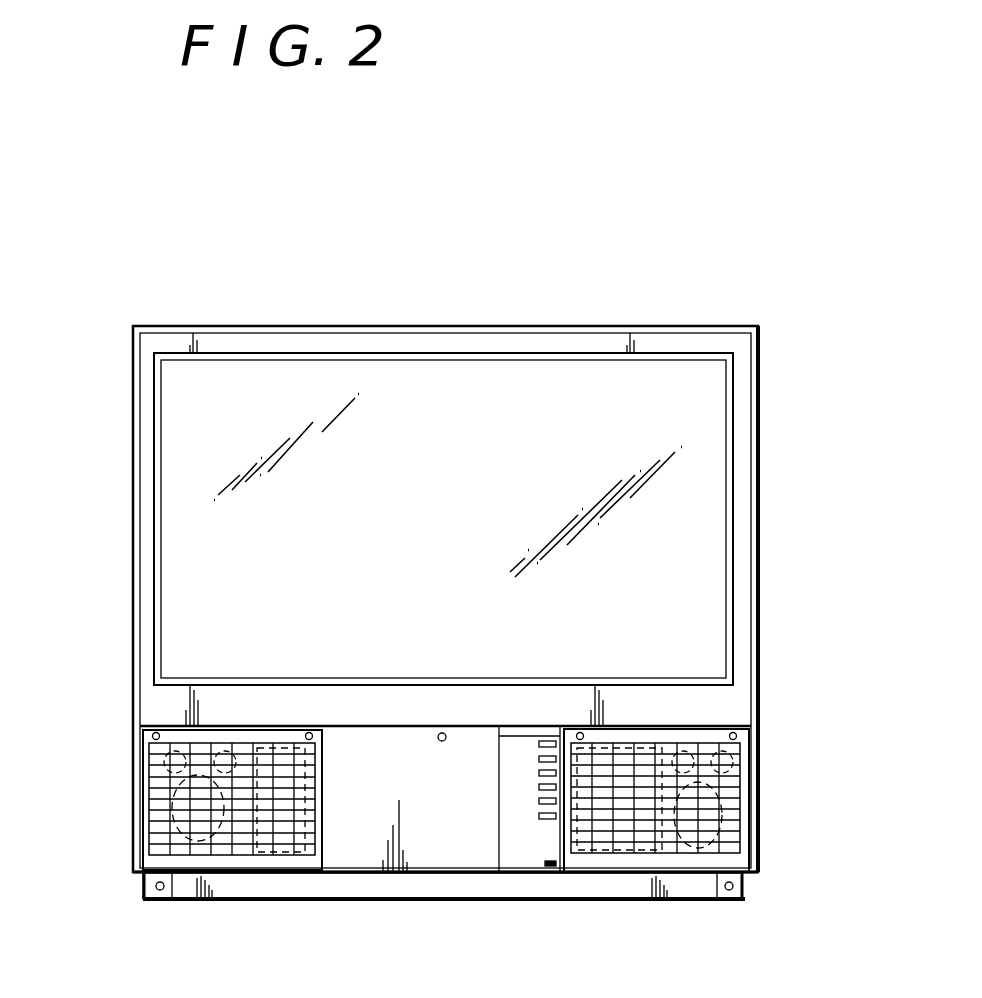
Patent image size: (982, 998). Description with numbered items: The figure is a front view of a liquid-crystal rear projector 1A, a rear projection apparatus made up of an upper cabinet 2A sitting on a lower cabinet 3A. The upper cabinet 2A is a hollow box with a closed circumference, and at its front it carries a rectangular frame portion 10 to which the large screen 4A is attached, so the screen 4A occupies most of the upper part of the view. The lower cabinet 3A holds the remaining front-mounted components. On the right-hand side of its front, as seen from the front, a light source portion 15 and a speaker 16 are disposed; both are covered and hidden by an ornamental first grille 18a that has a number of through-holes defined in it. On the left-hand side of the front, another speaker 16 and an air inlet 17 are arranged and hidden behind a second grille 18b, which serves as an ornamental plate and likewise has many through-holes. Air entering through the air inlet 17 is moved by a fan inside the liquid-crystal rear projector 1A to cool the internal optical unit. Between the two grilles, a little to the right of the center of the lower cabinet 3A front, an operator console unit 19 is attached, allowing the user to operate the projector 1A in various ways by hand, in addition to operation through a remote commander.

The liquid-crystal rear projector 1A is at (464, 570).
The upper cabinet 2A is at (521, 493).
The lower cabinet 3A is at (464, 813).
The screen 4A is at (707, 498).
The frame portion 10 is at (137, 502).
The light source portion 15 is at (620, 858).
The speaker 16 is at (150, 810).
The air inlet 17 is at (283, 858).
The first grille 18a is at (748, 726).
The second grille 18b is at (150, 737).
The operator console unit 19 is at (523, 863).